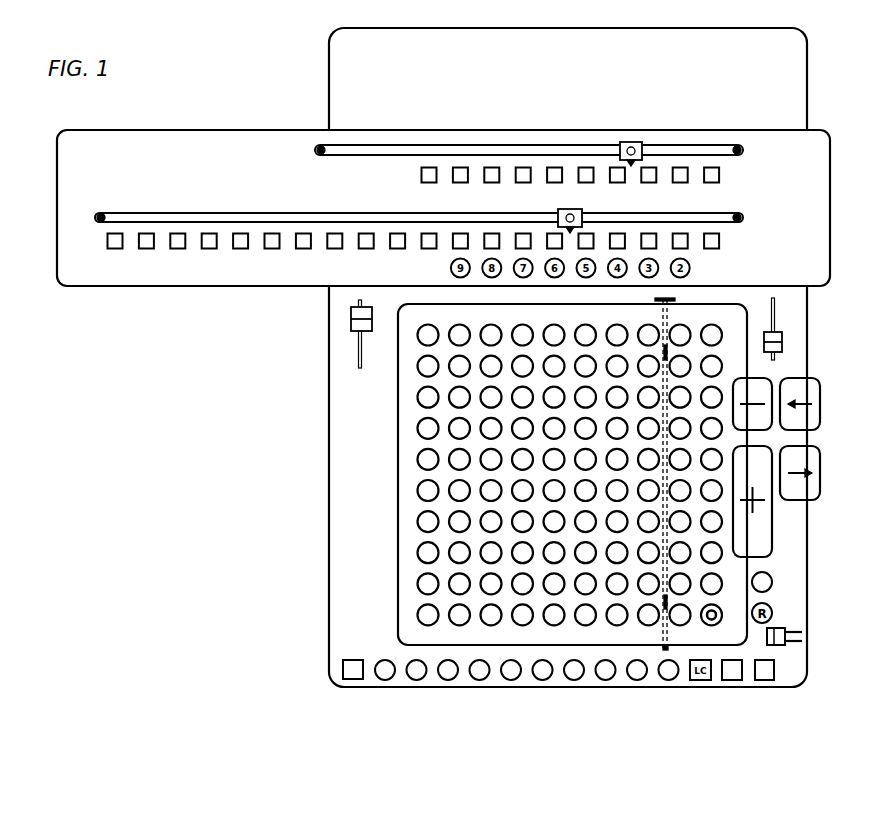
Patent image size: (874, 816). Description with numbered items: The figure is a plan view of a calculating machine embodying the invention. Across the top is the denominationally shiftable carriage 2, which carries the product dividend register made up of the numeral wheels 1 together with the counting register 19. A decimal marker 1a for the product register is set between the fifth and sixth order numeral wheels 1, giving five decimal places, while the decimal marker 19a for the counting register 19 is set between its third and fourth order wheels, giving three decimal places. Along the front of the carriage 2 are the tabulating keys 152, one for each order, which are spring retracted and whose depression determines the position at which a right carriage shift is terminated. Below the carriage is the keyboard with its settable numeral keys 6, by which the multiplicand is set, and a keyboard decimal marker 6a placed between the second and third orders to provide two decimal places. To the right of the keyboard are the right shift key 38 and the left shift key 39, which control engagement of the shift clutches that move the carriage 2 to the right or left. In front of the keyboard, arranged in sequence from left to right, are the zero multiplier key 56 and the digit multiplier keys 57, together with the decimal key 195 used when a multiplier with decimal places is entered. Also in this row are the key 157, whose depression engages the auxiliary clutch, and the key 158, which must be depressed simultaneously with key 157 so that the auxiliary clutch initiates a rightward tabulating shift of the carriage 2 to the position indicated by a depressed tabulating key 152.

The numeral wheels 1 is at (680, 249).
The decimal marker 1a is at (559, 213).
The carriage 2 is at (812, 182).
The numeral keys 6 is at (418, 493).
The decimal marker 6a is at (665, 600).
The counting register 19 is at (719, 176).
The decimal marker 19a is at (621, 143).
The right shift key 38 is at (808, 485).
The left shift key 39 is at (808, 418).
The zero multiplier key 56 is at (385, 681).
The multiplier keys 57 is at (511, 681).
The tabulating keys 152 is at (637, 284).
The key 157 is at (724, 681).
The key 158 is at (772, 676).
The decimal key 195 is at (345, 680).